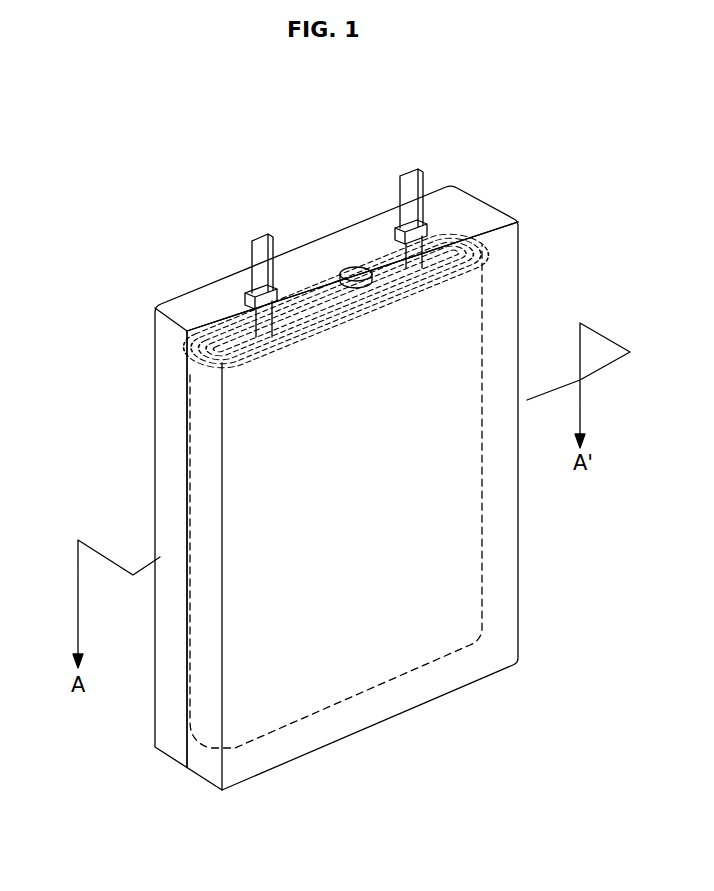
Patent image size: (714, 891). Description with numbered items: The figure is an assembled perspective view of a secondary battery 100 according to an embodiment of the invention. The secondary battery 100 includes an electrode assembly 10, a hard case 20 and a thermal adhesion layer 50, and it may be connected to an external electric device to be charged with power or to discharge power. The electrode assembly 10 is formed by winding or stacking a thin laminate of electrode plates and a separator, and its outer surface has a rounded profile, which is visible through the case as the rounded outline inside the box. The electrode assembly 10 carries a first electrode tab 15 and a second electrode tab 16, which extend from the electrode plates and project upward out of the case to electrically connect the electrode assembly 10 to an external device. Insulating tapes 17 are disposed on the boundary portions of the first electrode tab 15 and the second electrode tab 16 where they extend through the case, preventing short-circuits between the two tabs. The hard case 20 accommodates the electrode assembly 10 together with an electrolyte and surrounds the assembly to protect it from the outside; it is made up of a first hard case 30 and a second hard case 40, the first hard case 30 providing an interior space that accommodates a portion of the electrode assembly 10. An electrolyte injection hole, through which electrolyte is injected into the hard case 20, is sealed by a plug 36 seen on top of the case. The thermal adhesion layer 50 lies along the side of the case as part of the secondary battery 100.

The secondary battery 100 is at (100, 194).
The electrode assembly 10 is at (482, 288).
The first electrode tab 15 is at (412, 178).
The second electrode tab 16 is at (265, 242).
The insulating tape 17 is at (280, 292).
The hard case 20 is at (575, 167).
The first hard case 30 is at (502, 217).
The plug 36 is at (353, 266).
The second hard case 40 is at (465, 199).
The thermal adhesion layer 50 is at (185, 388).